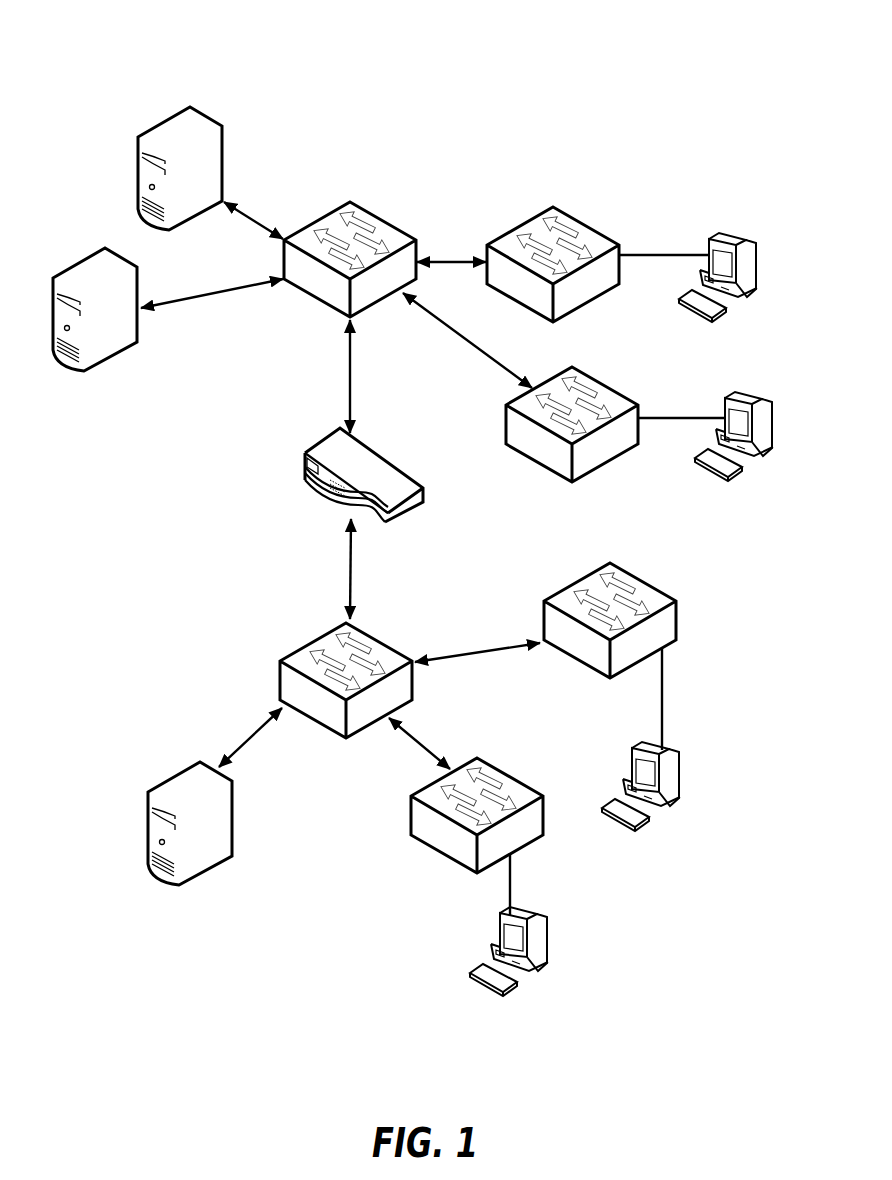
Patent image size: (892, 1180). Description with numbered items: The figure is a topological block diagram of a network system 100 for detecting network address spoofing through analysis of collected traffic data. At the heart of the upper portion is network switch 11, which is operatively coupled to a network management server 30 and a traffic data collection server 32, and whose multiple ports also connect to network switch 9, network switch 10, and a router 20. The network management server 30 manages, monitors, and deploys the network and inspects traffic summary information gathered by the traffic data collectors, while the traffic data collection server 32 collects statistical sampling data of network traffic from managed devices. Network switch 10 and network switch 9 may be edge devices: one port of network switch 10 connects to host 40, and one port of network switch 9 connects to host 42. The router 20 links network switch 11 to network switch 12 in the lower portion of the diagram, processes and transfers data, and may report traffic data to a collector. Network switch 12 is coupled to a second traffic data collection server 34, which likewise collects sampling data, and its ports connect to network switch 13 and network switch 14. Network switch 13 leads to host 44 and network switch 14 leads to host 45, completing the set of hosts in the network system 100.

The network system 100 is at (727, 60).
The network switch 9 is at (572, 424).
The network switch 10 is at (553, 264).
The network switch 11 is at (350, 259).
The network switch 12 is at (346, 680).
The network switch 13 is at (610, 620).
The network switch 14 is at (477, 815).
The router 20 is at (353, 481).
The network management server 30 is at (180, 168).
The traffic data collection server 32 is at (95, 309).
The traffic data collection server 34 is at (190, 823).
The host 40 is at (732, 275).
The host 42 is at (748, 435).
The host 44 is at (655, 785).
The host 45 is at (523, 951).